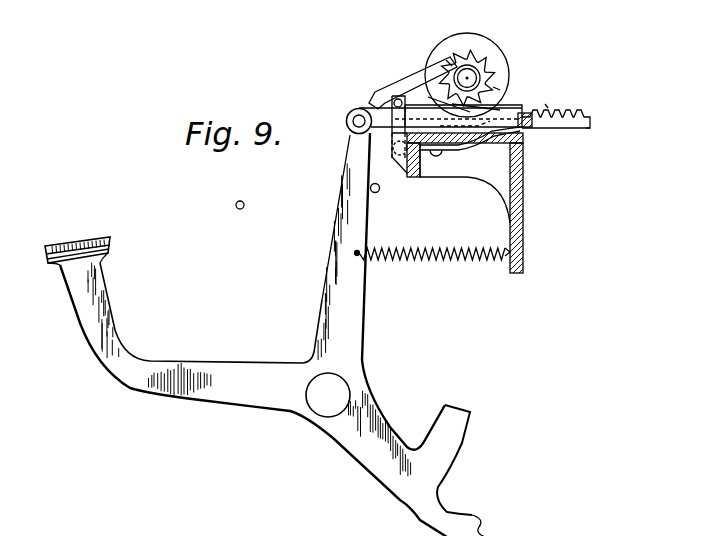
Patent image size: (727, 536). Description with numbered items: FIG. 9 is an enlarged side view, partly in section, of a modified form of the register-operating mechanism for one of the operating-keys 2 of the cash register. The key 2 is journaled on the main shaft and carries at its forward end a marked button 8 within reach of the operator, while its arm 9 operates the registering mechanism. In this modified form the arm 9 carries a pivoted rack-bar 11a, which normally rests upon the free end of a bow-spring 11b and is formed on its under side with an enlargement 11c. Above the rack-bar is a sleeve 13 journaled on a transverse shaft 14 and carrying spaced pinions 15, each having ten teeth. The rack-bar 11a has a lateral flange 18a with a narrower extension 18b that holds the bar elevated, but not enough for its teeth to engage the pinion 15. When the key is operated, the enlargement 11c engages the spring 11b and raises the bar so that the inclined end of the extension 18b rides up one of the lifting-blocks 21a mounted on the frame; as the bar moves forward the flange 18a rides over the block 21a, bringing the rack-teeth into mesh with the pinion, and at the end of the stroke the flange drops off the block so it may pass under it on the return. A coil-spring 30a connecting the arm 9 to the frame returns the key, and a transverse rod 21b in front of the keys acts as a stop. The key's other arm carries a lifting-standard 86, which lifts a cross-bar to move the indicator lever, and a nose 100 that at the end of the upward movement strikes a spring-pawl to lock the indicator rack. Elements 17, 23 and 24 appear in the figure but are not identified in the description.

The operating-keys 2 is at (222, 361).
The buttons 8 is at (113, 243).
The arm 9 is at (366, 302).
The pivoted rack-bar 11a is at (580, 114).
The bow-spring 11b is at (458, 207).
The enlargement 11c is at (508, 124).
The sleeve 13 is at (470, 78).
The transverse shaft 14 is at (495, 88).
The pinions 15 is at (448, 57).
The disc 17 is at (478, 65).
The lateral flange 18a is at (588, 128).
The extension 18b is at (525, 131).
The lifting-blocks 21a is at (522, 115).
The transverse rod 21b is at (245, 205).
The rack teeth 23 is at (548, 104).
The link 24 is at (418, 84).
The coil-spring 30a is at (425, 262).
The lifting-standard 86 is at (471, 413).
The nose 100 is at (478, 518).